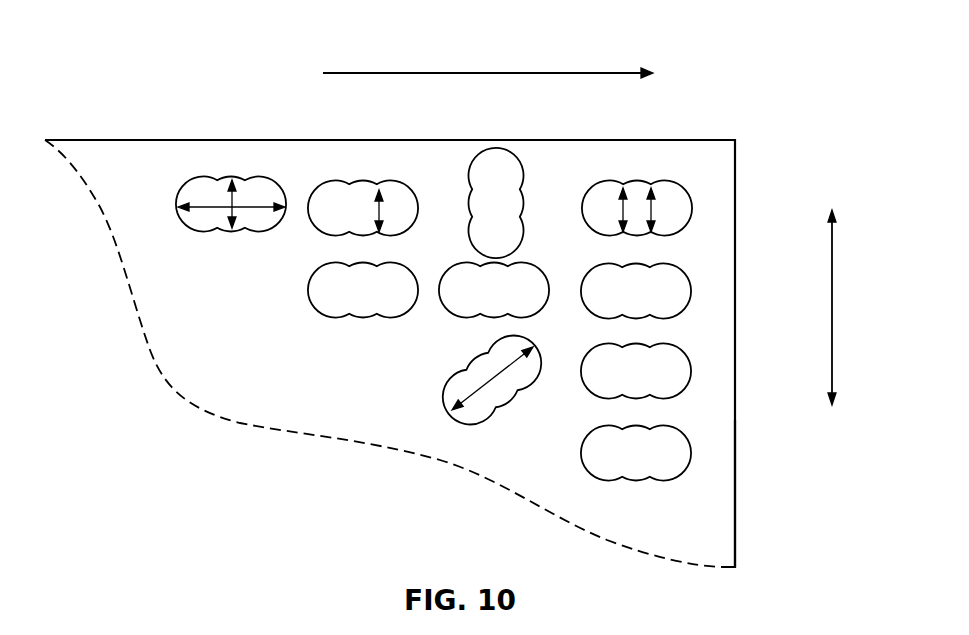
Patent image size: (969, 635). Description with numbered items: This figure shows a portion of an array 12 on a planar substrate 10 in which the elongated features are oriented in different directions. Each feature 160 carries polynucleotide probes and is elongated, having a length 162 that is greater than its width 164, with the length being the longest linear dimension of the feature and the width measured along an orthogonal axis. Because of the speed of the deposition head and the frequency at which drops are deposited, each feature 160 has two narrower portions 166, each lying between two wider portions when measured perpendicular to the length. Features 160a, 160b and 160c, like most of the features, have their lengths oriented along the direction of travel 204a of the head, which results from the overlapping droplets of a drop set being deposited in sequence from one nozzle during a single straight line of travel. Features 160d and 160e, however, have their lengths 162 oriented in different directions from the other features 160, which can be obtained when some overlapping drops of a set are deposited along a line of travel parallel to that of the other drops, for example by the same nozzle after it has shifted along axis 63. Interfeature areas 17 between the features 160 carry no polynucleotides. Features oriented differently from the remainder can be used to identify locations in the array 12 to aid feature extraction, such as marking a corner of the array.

The substrate 10 is at (712, 175).
The array 12 is at (710, 428).
The interfeature area 17 is at (300, 190).
The axis 63 is at (832, 340).
The elongated feature 160 is at (268, 222).
The elongated feature 160a is at (325, 305).
The elongated feature 160b is at (447, 307).
The elongated feature 160c is at (670, 305).
The elongated feature 160d is at (482, 402).
The elongated feature 160e is at (507, 165).
The length 162 is at (200, 208).
The width 164 is at (223, 190).
The narrower portion 166 is at (375, 191).
The direction of travel 204a is at (448, 73).